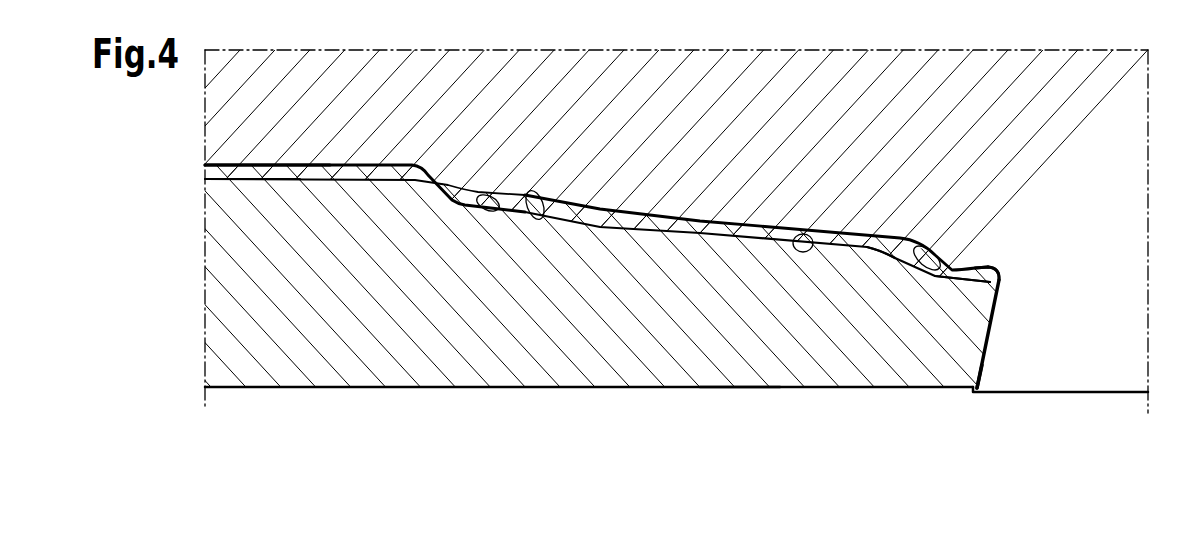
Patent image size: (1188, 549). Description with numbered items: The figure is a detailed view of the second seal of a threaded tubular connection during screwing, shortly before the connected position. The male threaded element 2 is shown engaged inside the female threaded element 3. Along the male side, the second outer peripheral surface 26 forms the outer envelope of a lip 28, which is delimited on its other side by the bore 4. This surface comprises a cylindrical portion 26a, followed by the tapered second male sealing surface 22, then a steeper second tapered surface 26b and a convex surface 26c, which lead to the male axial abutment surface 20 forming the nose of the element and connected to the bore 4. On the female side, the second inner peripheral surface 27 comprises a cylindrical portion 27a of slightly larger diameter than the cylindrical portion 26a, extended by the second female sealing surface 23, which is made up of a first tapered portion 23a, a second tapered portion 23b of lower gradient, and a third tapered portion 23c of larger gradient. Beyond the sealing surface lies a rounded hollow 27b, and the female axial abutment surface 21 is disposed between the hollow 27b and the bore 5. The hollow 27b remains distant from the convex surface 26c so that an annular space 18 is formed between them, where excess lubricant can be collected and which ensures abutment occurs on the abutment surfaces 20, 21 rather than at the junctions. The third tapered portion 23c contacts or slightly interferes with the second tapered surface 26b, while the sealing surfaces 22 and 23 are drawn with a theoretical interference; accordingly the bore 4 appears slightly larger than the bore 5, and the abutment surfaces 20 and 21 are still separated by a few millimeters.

The male threaded element 2 is at (336, 307).
The female threaded element 3 is at (760, 109).
The bore 4 is at (590, 387).
The bore 5 is at (1057, 393).
The annular space 18 is at (1000, 263).
The male axial abutment surface 20 is at (993, 327).
The female axial abutment surface 21 is at (968, 375).
The second male sealing surface 22 is at (633, 212).
The second female sealing surface 23 is at (556, 205).
The first tapered portion 23a is at (480, 196).
The second tapered portion 23b is at (815, 243).
The third tapered portion 23c is at (947, 250).
The second outer peripheral surface 26 is at (329, 173).
The cylindrical portion 26a is at (252, 177).
The second tapered surface 26b is at (893, 253).
The convex surface 26c is at (990, 283).
The second inner peripheral surface 27 is at (388, 166).
The cylindrical portion 27a is at (303, 167).
The rounded hollow 27b is at (1003, 278).
The lip 28 is at (740, 387).